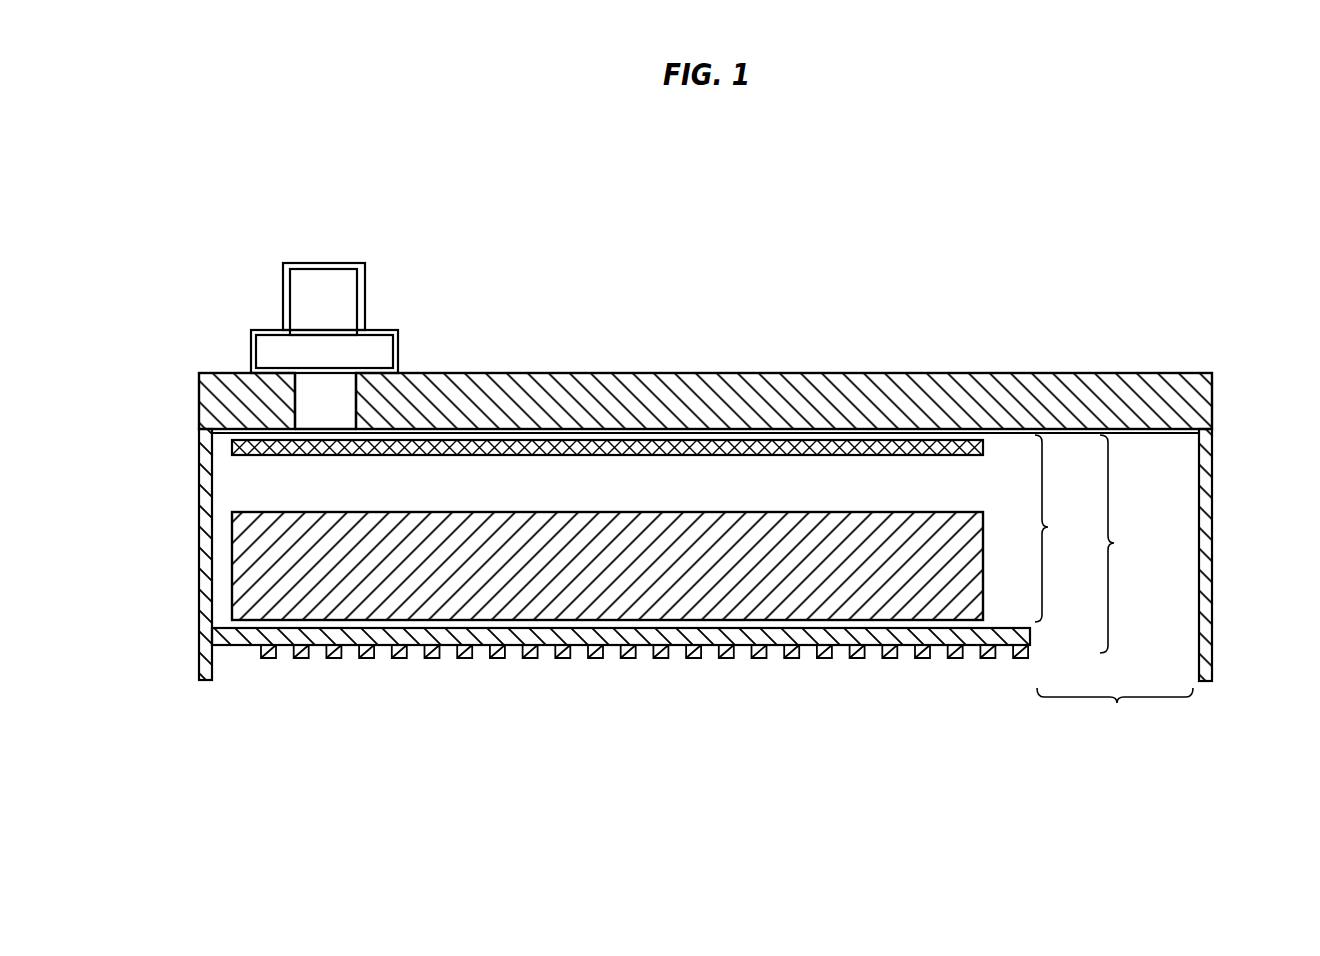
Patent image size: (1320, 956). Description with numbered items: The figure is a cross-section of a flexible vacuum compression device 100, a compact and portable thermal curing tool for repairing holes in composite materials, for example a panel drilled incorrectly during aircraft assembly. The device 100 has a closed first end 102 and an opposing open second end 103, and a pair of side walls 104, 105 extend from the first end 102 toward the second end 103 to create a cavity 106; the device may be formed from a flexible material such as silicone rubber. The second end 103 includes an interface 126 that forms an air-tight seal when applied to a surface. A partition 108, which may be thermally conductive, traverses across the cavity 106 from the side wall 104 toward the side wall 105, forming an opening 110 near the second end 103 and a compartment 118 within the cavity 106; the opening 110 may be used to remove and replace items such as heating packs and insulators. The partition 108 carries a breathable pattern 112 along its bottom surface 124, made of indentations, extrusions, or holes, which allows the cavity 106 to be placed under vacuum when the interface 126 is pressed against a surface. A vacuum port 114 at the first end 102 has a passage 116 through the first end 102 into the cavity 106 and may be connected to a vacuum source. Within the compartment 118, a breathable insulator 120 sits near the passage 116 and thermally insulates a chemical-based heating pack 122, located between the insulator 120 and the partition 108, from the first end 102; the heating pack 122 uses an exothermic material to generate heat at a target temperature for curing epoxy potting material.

The flexible vacuum compression device 100 is at (878, 203).
The first end 102 is at (790, 373).
The second end 103 is at (716, 782).
The side wall 104 is at (199, 548).
The side wall 105 is at (1213, 498).
The cavity 106 is at (1129, 544).
The partition 108 is at (246, 648).
The opening 110 is at (1115, 709).
The breathable pattern 112 is at (398, 658).
The vacuum port 114 is at (343, 319).
The passage 116 is at (329, 262).
The compartment 118 is at (1061, 528).
The breathable insulator 120 is at (918, 455).
The chemical-based heating pack 122 is at (875, 512).
The bottom surface 124 is at (644, 648).
The interface 126 is at (204, 686).